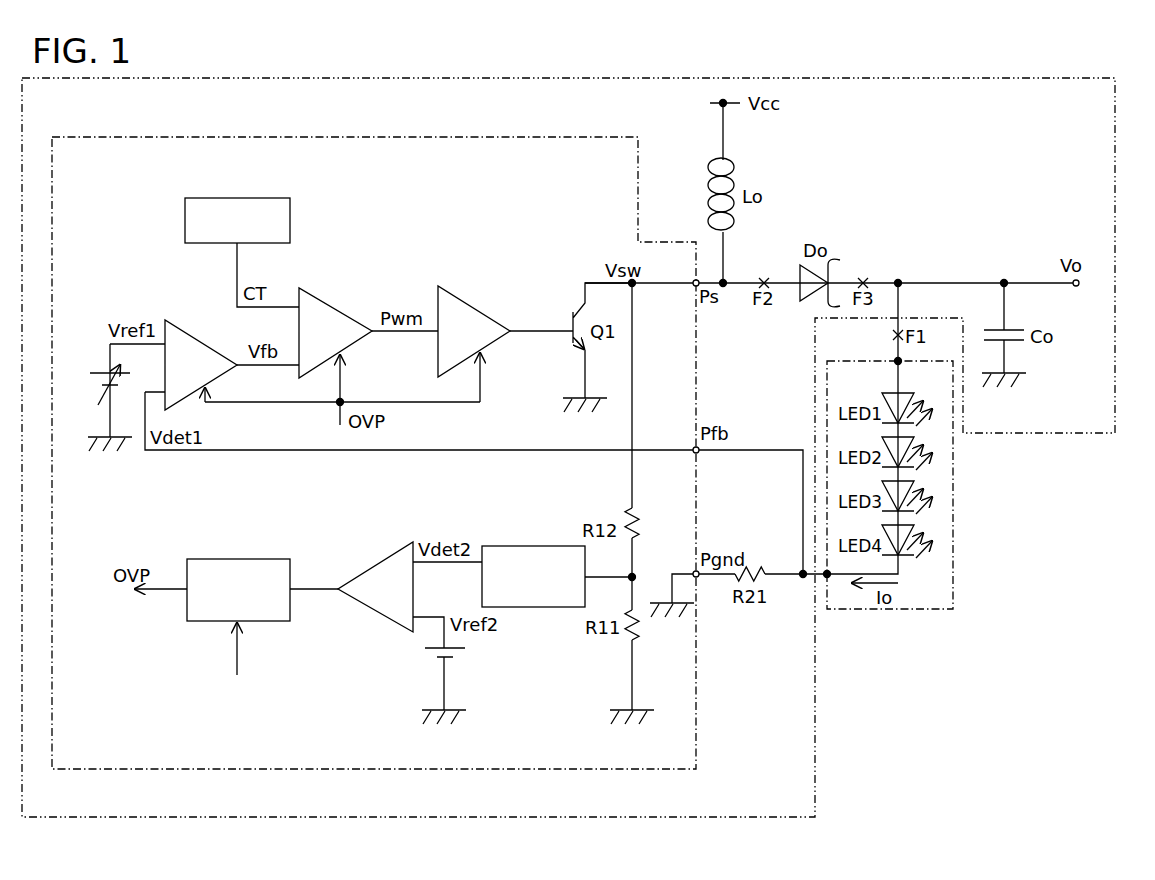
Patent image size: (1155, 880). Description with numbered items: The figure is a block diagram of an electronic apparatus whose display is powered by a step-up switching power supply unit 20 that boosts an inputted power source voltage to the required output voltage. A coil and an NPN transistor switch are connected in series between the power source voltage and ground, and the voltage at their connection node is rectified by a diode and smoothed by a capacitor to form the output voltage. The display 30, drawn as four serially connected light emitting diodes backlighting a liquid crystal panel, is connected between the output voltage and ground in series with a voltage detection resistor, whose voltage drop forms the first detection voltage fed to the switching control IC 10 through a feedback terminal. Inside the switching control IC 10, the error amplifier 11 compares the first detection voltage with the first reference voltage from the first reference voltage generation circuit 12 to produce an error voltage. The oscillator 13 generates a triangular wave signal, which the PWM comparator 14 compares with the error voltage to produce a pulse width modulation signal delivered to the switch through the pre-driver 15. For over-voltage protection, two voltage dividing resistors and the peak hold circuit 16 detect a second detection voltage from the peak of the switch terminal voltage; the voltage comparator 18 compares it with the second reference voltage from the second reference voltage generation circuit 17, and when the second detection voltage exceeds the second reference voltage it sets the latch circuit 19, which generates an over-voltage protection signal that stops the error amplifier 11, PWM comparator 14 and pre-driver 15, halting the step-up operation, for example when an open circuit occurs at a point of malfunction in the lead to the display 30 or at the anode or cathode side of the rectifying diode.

The switching control IC 10 is at (467, 769).
The error amplifier 11 is at (203, 338).
The first reference voltage generation circuit 12 is at (102, 383).
The oscillator 13 is at (290, 220).
The PWM comparator 14 is at (340, 306).
The pre-driver 15 is at (476, 307).
The peak hold circuit 16 is at (500, 546).
The second reference voltage generation circuit 17 is at (462, 655).
The voltage comparator 18 is at (370, 566).
The latch circuit 19 is at (212, 559).
The switching power supply unit 20 is at (815, 771).
The display 30 is at (953, 570).